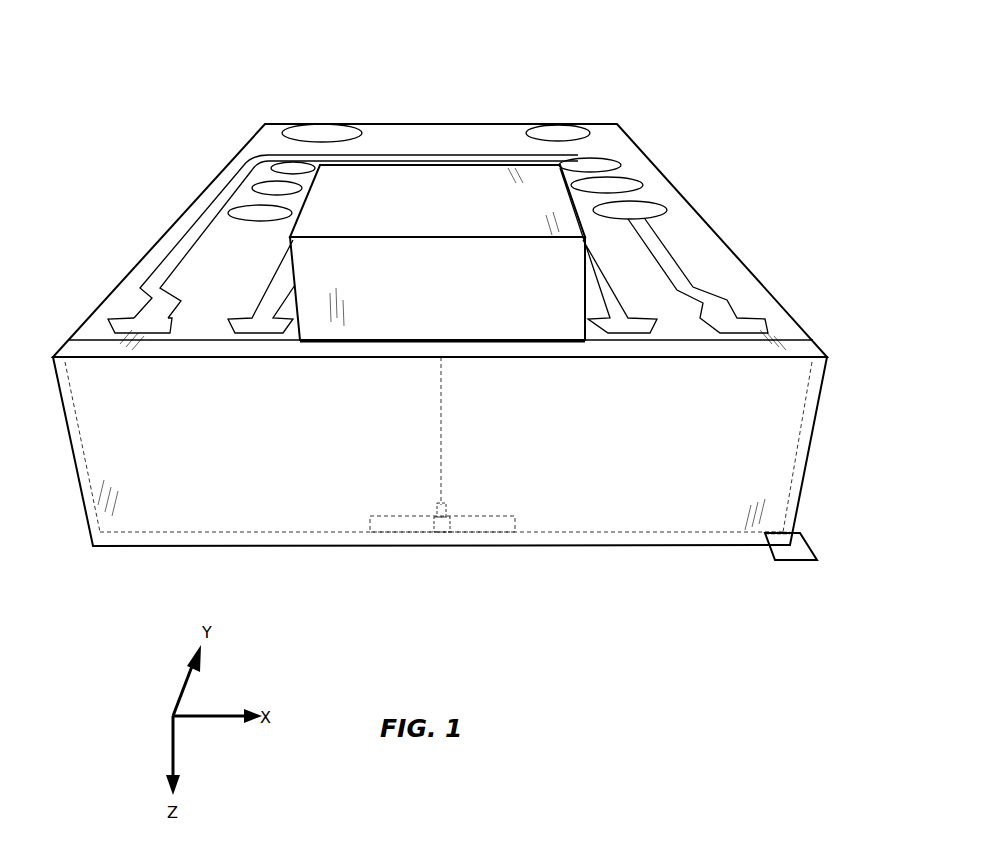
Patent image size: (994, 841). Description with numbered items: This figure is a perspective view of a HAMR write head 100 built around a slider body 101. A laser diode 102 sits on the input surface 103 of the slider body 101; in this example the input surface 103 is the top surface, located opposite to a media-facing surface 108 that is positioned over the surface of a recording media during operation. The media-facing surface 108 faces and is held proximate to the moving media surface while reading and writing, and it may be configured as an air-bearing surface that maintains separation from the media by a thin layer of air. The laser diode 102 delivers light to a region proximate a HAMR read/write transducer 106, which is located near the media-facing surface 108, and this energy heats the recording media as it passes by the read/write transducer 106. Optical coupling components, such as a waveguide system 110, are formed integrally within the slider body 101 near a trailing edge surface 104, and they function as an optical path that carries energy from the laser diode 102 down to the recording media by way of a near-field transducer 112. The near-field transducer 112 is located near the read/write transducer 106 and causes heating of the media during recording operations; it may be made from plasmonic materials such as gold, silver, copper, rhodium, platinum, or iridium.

The HAMR write head 100 is at (613, 68).
The slider body 101 is at (242, 150).
The laser diode 102 is at (396, 173).
The input surface 103 is at (120, 302).
The trailing edge surface 104 is at (153, 520).
The HAMR read/write transducer 106 is at (447, 533).
The media-facing surface 108 is at (807, 562).
The waveguide system 110 is at (441, 425).
The near-field transducer 112 is at (440, 533).